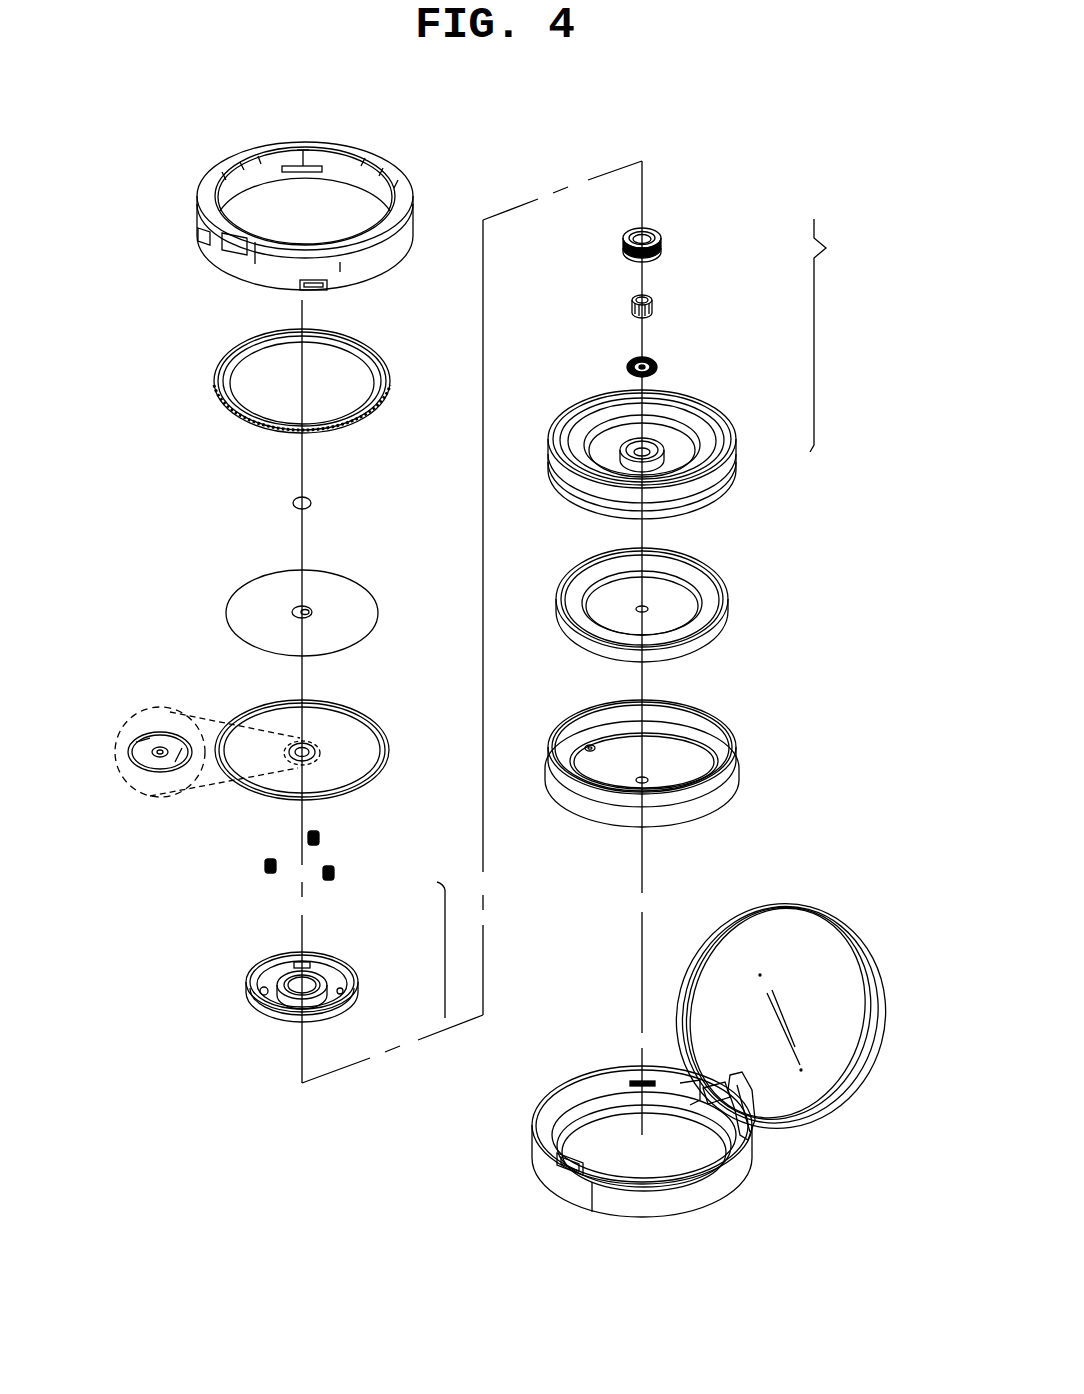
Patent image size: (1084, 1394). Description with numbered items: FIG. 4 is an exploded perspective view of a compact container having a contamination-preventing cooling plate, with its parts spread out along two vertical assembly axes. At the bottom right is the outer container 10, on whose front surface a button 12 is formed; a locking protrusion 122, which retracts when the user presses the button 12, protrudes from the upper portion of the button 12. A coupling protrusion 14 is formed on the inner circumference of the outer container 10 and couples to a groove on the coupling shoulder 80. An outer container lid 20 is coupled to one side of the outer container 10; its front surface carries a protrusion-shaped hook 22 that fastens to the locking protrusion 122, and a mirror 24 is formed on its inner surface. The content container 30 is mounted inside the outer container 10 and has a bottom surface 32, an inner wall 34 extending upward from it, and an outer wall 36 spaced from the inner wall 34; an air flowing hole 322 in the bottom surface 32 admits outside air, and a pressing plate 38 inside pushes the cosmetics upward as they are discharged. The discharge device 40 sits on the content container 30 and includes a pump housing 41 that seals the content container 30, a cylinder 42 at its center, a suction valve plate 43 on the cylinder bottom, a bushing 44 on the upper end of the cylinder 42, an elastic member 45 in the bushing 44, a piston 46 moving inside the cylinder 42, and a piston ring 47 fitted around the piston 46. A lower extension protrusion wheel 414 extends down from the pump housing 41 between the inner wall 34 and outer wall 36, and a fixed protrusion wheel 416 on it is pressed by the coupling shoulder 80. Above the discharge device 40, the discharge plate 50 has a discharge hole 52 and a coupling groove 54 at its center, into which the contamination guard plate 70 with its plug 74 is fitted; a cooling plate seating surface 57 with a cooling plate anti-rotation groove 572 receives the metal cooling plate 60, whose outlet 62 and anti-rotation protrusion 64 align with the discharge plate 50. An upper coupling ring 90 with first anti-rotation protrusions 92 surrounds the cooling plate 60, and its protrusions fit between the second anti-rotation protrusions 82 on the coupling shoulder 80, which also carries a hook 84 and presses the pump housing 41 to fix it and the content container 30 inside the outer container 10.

The outer container 10 is at (601, 1168).
The button 12 is at (565, 1185).
The locking protrusion 122 is at (558, 1172).
The coupling protrusion 14 is at (636, 1080).
The outer container lid 20 is at (790, 980).
The hook 22 is at (812, 927).
The mirror 24 is at (778, 935).
The content container 30 is at (689, 747).
The bottom surface 32 is at (673, 760).
The air flowing hole 322 is at (589, 745).
The inner wall 34 is at (732, 738).
The outer wall 36 is at (739, 775).
The pressing plate 38 is at (728, 598).
The discharge device 40 is at (837, 335).
The pump housing 41 is at (679, 461).
The lower extension protrusion wheel 414 is at (712, 500).
The fixed protrusion wheel 416 is at (730, 470).
The cylinder 42 is at (683, 430).
The suction valve plate 43 is at (660, 365).
The bushing 44 is at (366, 988).
The elastic member 45 is at (336, 872).
The piston 46 is at (655, 307).
The piston ring 47 is at (662, 243).
The discharge plate 50 is at (275, 751).
The discharge hole 52 is at (143, 746).
The coupling groove 54 is at (160, 746).
The cooling plate seating surface 57 is at (345, 713).
The cooling plate anti-rotation groove 572 is at (360, 717).
The cooling plate 60 is at (271, 595).
The outlet 62 is at (307, 610).
The anti-rotation protrusion 64 is at (355, 582).
The contamination guard plate 70 is at (244, 506).
The stopper plug 74 is at (303, 509).
The coupling shoulder 80 is at (268, 217).
The second anti-rotation protrusions 82 is at (333, 151).
The hook 84 is at (322, 290).
The upper coupling ring 90 is at (277, 381).
The first anti-rotation protrusions 92 is at (383, 428).